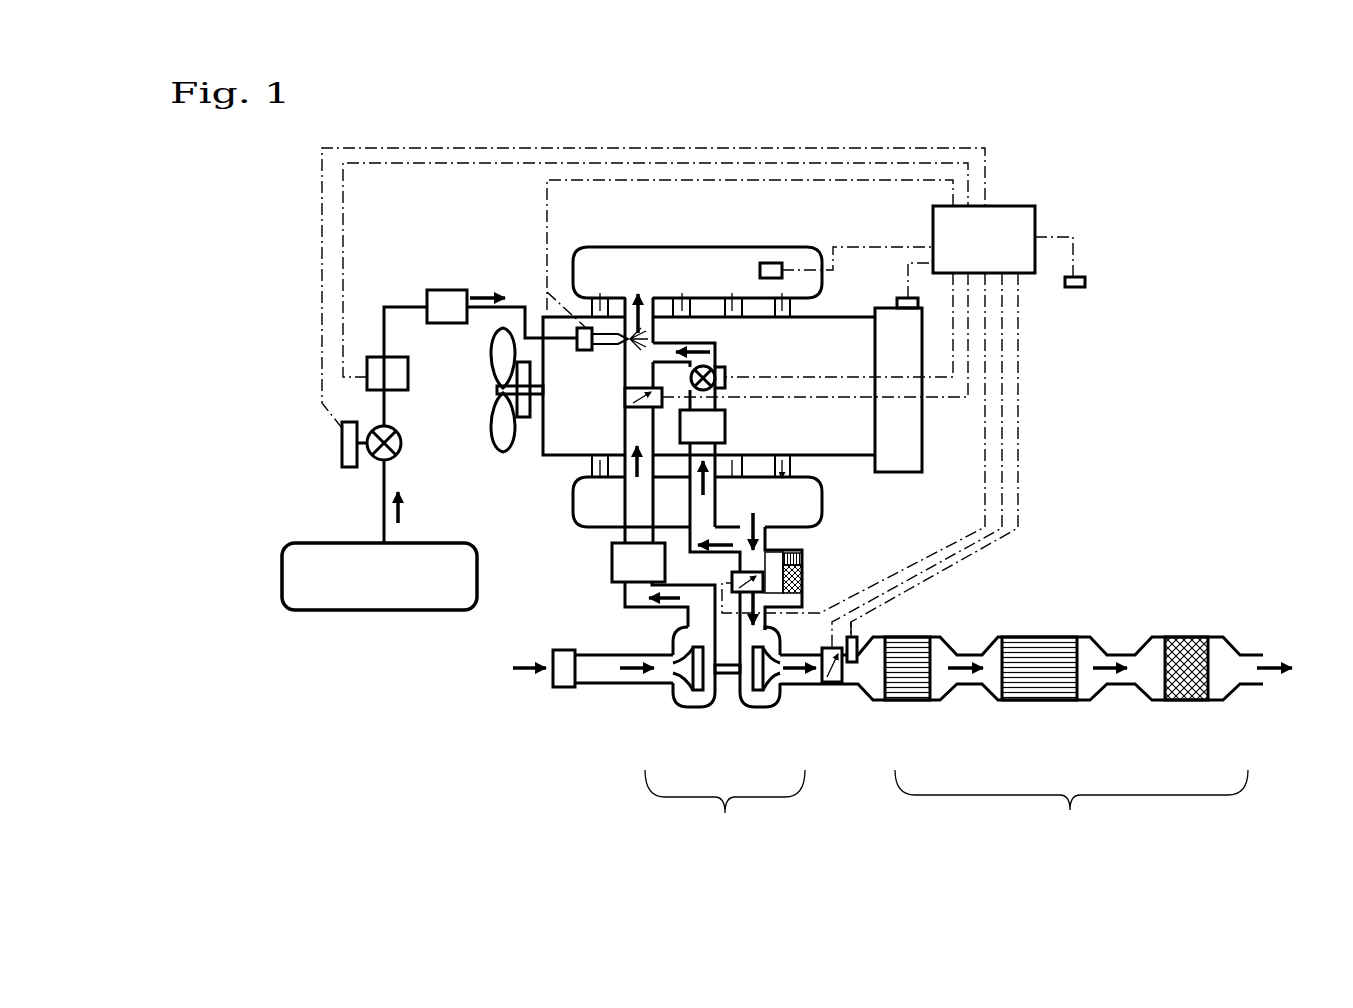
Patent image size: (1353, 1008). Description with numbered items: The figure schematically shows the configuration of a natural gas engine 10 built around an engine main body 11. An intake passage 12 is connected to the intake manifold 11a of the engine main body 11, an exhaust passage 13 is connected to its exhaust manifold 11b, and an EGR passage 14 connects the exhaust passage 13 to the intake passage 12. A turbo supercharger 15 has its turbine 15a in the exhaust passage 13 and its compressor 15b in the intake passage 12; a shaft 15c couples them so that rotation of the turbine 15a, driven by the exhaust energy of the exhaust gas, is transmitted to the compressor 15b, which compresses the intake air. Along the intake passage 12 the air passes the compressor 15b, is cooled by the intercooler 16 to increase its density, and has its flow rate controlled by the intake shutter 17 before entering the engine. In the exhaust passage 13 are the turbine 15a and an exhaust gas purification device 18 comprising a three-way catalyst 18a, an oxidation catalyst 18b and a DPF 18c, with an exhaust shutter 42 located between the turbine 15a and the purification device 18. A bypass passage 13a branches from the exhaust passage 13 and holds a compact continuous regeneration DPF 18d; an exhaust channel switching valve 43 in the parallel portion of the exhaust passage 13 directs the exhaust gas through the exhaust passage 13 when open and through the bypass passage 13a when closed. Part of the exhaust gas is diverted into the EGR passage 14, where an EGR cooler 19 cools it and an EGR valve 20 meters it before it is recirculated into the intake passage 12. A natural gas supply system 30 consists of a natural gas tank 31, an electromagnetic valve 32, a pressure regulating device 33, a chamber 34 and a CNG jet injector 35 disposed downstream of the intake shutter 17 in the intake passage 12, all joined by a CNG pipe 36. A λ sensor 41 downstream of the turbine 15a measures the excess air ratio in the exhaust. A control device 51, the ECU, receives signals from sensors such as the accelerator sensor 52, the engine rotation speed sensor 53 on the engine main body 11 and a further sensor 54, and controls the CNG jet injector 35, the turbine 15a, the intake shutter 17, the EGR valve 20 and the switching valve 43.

The natural gas engine 10 is at (1128, 432).
The engine main body 11 is at (892, 472).
The intake manifold 11a is at (690, 247).
The exhaust manifold 11b is at (573, 503).
The intake passage 12 is at (625, 598).
The exhaust passage 13 is at (768, 618).
The bypass passage 13a is at (803, 547).
The EGR passage 14 is at (718, 497).
The turbo supercharger 15 is at (725, 810).
The turbine 15a is at (747, 707).
The compressor 15b is at (697, 707).
The shaft 15c is at (733, 673).
The intercooler 16 is at (612, 560).
The intake shutter 17 is at (625, 398).
The exhaust gas purification device 18 is at (1071, 808).
The three-way catalyst 18a is at (903, 700).
The oxidation catalyst 18b is at (1033, 700).
The DPF 18c is at (1182, 700).
The compact continuous regeneration DPF 18d is at (803, 577).
The EGR cooler 19 is at (728, 428).
The EGR valve 20 is at (728, 368).
The natural gas supply system 30 is at (312, 292).
The natural gas tank 31 is at (383, 610).
The electromagnetic valve 32 is at (398, 452).
The pressure regulating device 33 is at (408, 374).
The chamber 34 is at (443, 290).
The CNG jet injector 35 is at (583, 327).
The CNG pipe 36 is at (381, 485).
The λ sensor 41 is at (857, 635).
The exhaust shutter 42 is at (833, 683).
The exhaust channel switching valve 43 is at (732, 582).
The control device 51 is at (995, 206).
The accelerator sensor 52 is at (1075, 287).
The engine rotation speed sensor 53 is at (897, 302).
The intake pressure sensor 54 is at (768, 263).